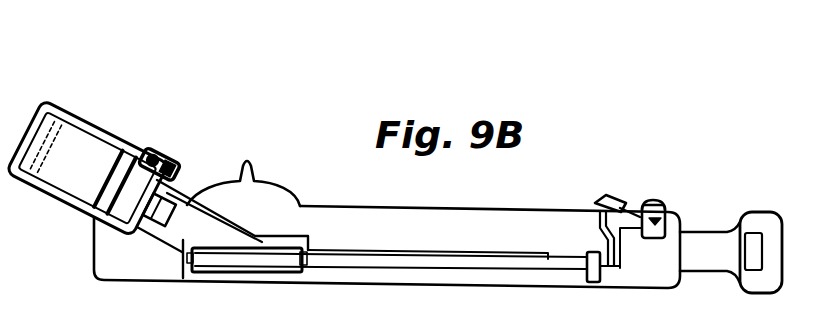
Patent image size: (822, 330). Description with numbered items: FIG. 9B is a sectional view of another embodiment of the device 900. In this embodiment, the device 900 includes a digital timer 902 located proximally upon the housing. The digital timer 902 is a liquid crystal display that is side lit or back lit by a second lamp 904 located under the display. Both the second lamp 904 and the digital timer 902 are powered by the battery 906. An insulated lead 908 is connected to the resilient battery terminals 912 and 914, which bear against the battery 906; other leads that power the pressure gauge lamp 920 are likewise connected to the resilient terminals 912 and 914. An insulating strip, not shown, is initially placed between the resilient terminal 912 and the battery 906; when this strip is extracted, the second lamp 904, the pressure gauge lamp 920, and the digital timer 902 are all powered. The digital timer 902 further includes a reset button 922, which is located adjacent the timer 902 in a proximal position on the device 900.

The device 900 is at (484, 205).
The digital timer 902 is at (614, 190).
The second lamp 904 is at (596, 200).
The battery 906 is at (262, 264).
The insulated lead 908 is at (549, 260).
The resilient battery terminal 912 is at (180, 283).
The resilient battery terminal 914 is at (309, 269).
The pressure gauge lamp 920 is at (154, 150).
The reset button 922 is at (647, 200).